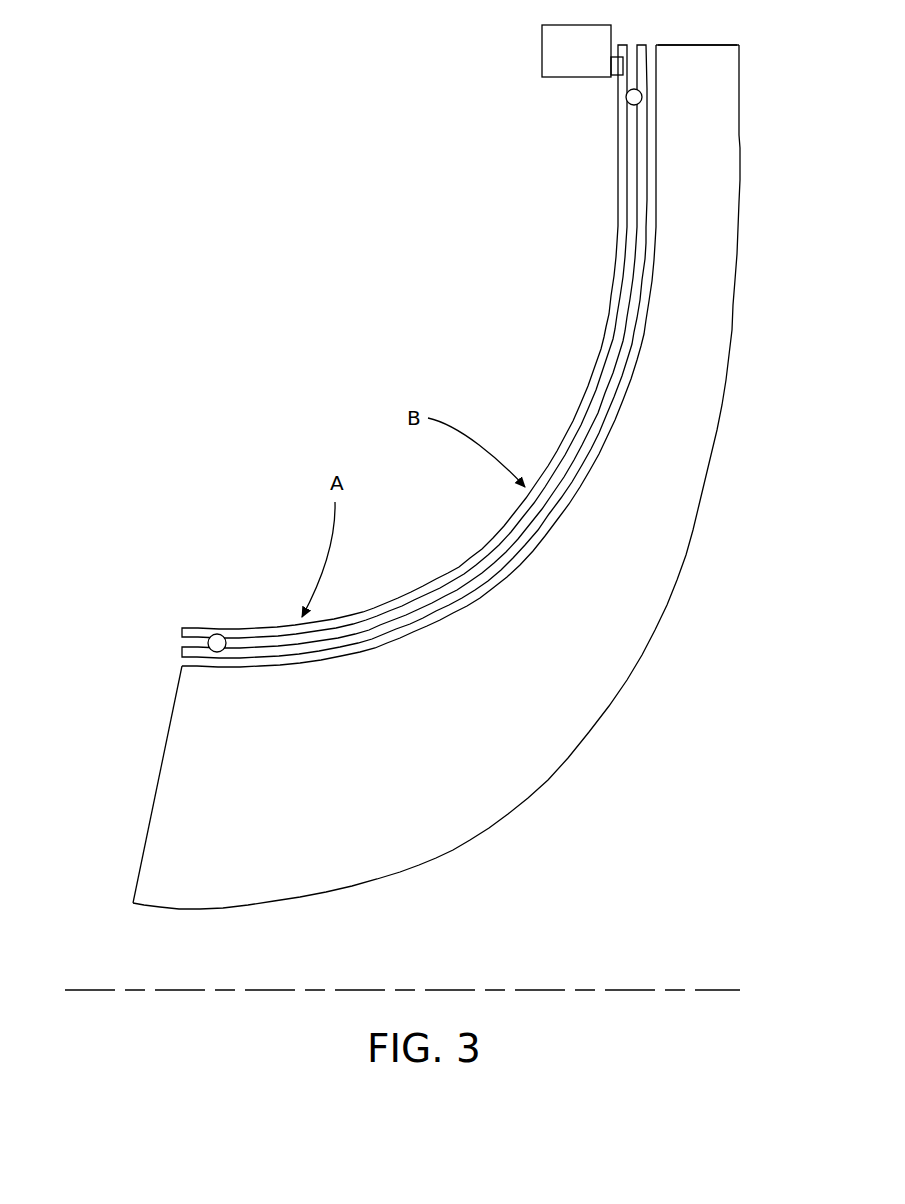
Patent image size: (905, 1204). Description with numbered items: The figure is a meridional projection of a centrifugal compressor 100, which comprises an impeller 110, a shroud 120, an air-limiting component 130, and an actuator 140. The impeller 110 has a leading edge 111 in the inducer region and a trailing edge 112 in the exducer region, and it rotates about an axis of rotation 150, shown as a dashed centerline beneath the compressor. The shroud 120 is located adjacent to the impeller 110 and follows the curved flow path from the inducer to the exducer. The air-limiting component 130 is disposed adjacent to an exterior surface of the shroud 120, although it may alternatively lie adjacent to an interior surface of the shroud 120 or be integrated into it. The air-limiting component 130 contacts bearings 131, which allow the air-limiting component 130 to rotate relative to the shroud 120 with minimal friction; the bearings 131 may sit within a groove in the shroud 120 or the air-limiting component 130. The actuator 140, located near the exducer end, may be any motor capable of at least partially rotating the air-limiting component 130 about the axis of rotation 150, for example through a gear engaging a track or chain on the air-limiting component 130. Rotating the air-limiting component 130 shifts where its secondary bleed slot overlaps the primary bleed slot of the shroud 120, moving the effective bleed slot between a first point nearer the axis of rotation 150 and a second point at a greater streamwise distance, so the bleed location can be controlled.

The centrifugal compressor 100 is at (431, 507).
The impeller 110 is at (573, 672).
The leading edge 111 is at (175, 682).
The trailing edge 112 is at (720, 47).
The shroud 120 is at (603, 392).
The air-limiting component 130 is at (600, 330).
The bearings 131 is at (626, 99).
The actuator 140 is at (542, 52).
The axis of rotation 150 is at (598, 988).